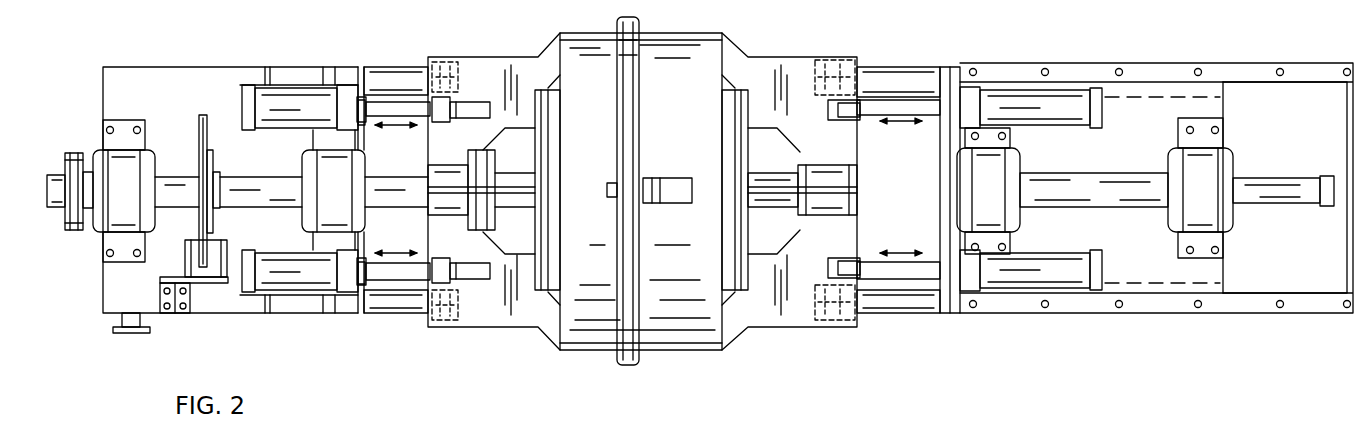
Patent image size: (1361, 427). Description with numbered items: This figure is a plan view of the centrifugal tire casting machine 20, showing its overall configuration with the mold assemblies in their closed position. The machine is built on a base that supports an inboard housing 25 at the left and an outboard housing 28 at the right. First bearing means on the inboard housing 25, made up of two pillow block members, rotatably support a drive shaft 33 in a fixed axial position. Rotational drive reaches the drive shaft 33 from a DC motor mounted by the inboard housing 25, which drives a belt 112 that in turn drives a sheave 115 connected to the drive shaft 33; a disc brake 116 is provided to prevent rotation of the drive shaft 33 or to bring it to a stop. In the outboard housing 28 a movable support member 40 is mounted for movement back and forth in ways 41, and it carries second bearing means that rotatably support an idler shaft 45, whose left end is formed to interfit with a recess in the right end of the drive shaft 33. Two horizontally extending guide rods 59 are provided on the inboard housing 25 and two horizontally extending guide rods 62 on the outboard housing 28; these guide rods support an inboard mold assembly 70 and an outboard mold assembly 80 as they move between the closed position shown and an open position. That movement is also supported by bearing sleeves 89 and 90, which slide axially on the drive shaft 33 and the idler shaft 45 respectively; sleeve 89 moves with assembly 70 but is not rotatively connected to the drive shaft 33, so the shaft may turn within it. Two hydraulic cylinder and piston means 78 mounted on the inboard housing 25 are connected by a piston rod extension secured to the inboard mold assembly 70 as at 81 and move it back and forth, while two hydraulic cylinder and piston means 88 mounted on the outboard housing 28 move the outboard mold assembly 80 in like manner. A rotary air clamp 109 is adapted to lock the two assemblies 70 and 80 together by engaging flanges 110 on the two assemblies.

The centrifugal tire casting machine 20 is at (958, 45).
The inboard housing 25 is at (312, 325).
The outboard housing 28 is at (1122, 325).
The drive shaft 33 is at (250, 183).
The movable support member 40 is at (1210, 273).
The ways 41 is at (1290, 83).
The idler shaft 45 is at (1095, 180).
The guide rods 59 is at (398, 78).
The guide rods 62 is at (912, 330).
The inboard mold assembly 70 is at (530, 340).
The hydraulic cylinder and piston means 78 is at (293, 95).
The outboard mold assembly 80 is at (745, 340).
The piston rod extension connection 81 is at (462, 108).
The hydraulic cylinder and piston means 88 is at (1057, 95).
The bearing sleeve 89 is at (445, 175).
The bearing sleeve 90 is at (830, 175).
The rotary air clamp 109 is at (668, 185).
The flanges 110 is at (632, 118).
The belt 112 is at (74, 153).
The sheave 115 is at (62, 215).
The disc brake 116 is at (212, 292).